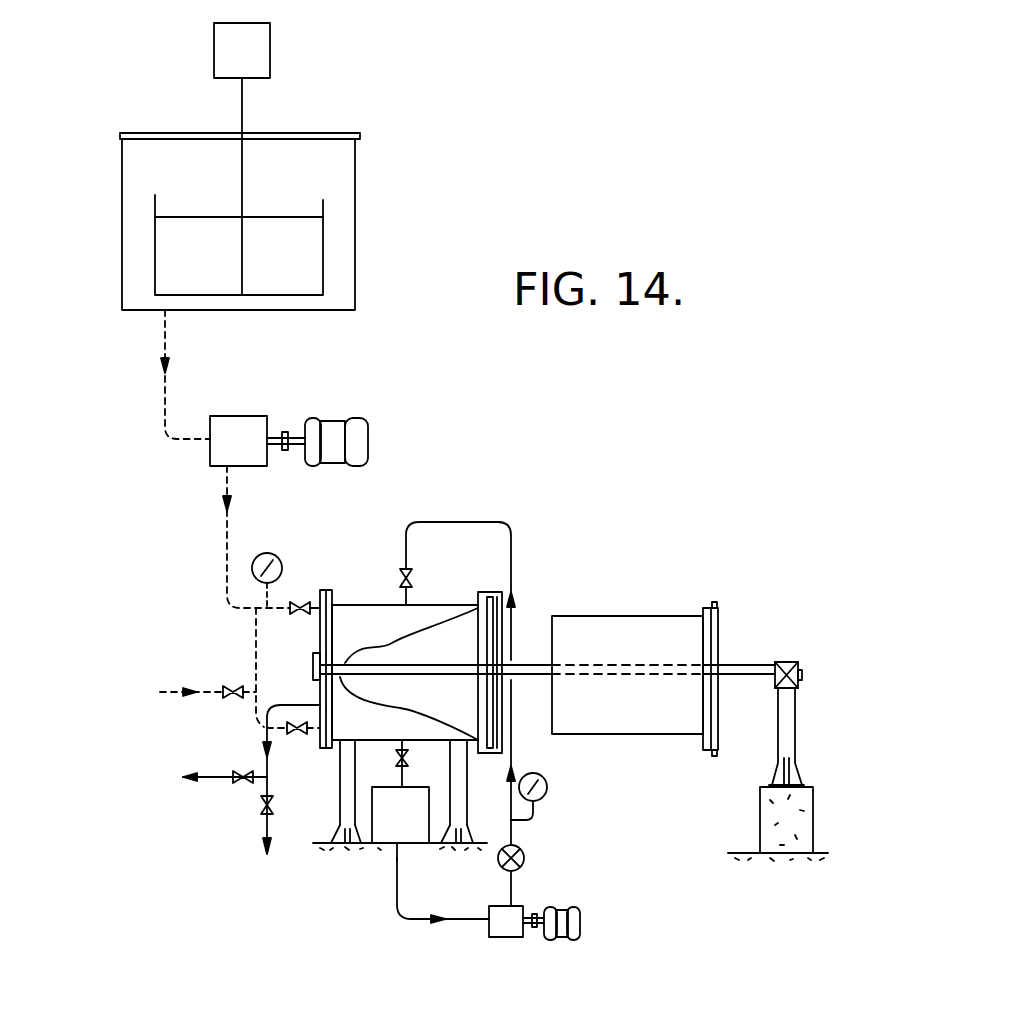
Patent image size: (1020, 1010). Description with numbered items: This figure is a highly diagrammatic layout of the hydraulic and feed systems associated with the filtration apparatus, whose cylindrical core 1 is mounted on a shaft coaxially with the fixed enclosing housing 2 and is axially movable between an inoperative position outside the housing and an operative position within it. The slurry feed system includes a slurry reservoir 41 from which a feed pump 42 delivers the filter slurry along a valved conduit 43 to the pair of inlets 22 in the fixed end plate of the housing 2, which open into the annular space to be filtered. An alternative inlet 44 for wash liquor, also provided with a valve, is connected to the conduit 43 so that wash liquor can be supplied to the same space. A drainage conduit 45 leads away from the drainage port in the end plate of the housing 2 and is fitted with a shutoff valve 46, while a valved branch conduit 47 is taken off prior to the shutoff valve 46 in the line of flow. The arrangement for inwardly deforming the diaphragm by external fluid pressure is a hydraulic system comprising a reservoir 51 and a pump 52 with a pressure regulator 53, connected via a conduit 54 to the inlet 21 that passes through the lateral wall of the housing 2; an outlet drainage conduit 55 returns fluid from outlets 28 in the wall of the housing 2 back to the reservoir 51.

The cylindrical core 1 is at (630, 636).
The housing 2 is at (347, 630).
The inlet 21 is at (408, 598).
The inlets 22 is at (318, 600).
The outlets 28 is at (400, 847).
The slurry reservoir 41 is at (355, 200).
The feed pump 42 is at (235, 425).
The valved conduit 43 is at (226, 516).
The alternative inlet 44 is at (205, 692).
The drainage conduit 45 is at (263, 825).
The shutoff valve 46 is at (272, 808).
The branch conduit 47 is at (213, 775).
The reservoir 51 is at (395, 823).
The pump 52 is at (510, 928).
The pressure regulator 53 is at (524, 863).
The conduit 54 is at (450, 520).
The outlet drainage conduit 55 is at (440, 923).